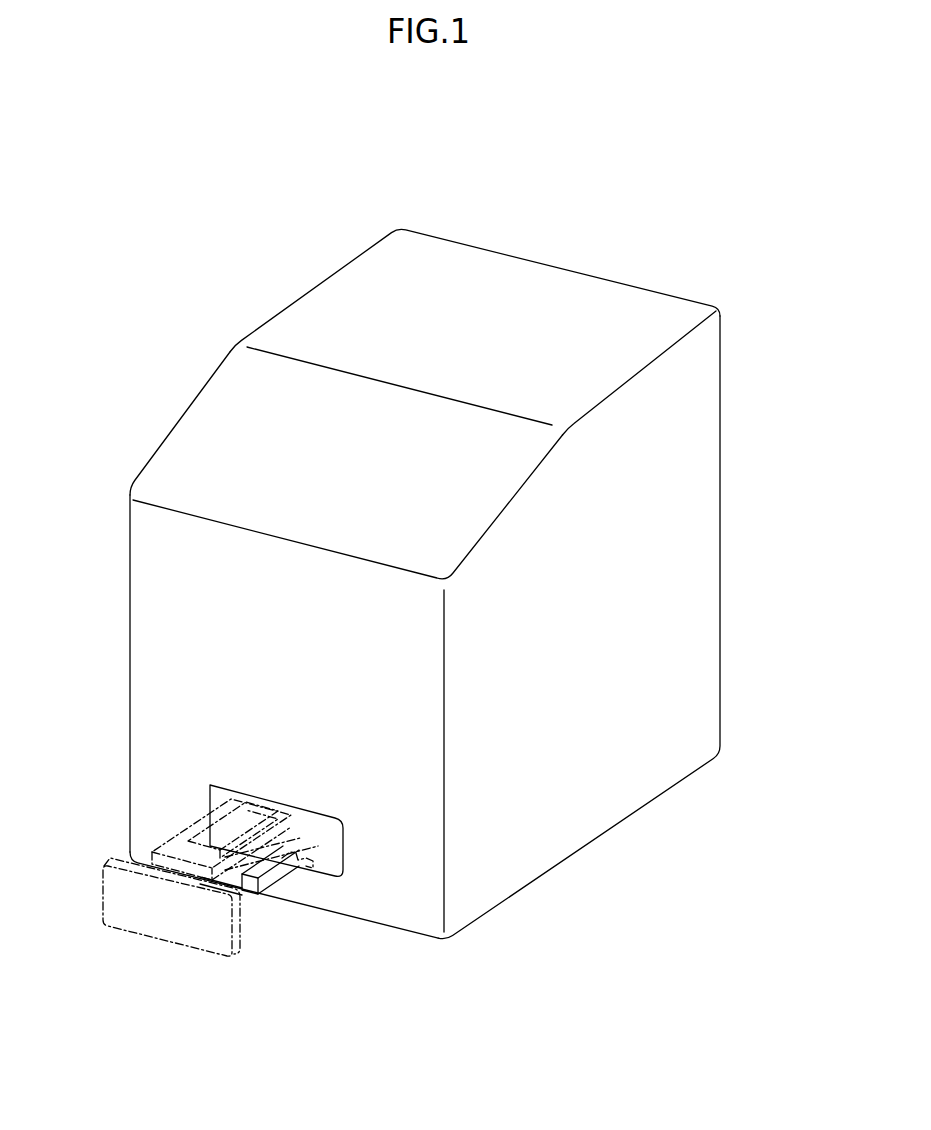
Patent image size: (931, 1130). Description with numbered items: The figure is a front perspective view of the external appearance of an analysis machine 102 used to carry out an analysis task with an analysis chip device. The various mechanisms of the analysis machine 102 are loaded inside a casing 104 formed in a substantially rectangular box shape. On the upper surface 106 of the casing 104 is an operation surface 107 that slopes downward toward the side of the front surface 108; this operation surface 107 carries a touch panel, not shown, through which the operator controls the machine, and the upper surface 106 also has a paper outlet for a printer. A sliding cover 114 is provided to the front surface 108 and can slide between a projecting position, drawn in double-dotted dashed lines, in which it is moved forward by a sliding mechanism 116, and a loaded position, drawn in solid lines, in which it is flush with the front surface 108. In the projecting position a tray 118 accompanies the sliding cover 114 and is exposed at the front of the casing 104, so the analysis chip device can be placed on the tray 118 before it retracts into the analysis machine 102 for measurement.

The analysis machine 102 is at (619, 878).
The casing 104 is at (722, 667).
The upper surface 106 is at (580, 298).
The operation surface 107 is at (191, 430).
The front surface 108 is at (147, 648).
The sliding cover 114 is at (312, 873).
The sliding mechanism 116 is at (255, 900).
The tray 118 is at (192, 825).